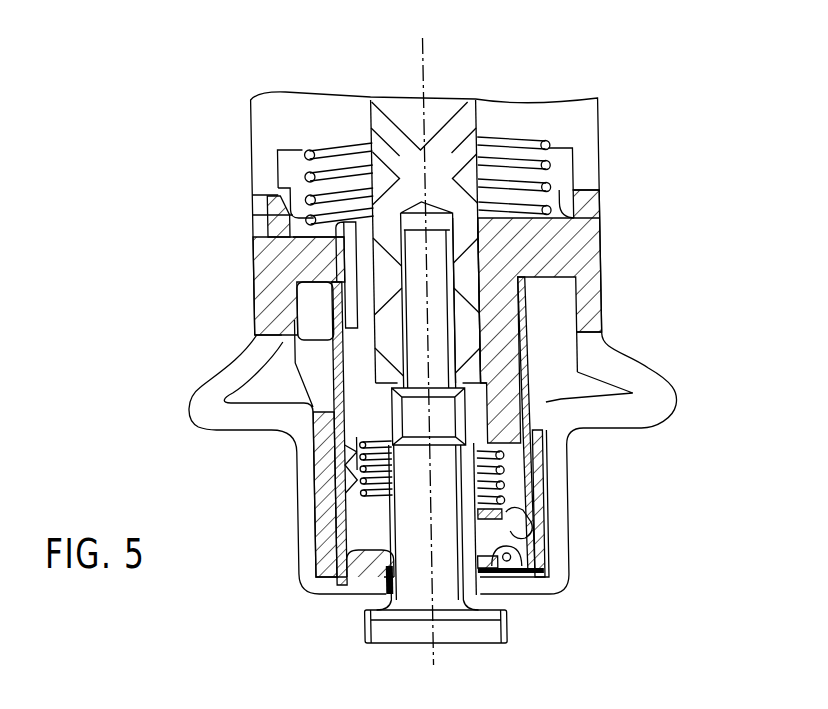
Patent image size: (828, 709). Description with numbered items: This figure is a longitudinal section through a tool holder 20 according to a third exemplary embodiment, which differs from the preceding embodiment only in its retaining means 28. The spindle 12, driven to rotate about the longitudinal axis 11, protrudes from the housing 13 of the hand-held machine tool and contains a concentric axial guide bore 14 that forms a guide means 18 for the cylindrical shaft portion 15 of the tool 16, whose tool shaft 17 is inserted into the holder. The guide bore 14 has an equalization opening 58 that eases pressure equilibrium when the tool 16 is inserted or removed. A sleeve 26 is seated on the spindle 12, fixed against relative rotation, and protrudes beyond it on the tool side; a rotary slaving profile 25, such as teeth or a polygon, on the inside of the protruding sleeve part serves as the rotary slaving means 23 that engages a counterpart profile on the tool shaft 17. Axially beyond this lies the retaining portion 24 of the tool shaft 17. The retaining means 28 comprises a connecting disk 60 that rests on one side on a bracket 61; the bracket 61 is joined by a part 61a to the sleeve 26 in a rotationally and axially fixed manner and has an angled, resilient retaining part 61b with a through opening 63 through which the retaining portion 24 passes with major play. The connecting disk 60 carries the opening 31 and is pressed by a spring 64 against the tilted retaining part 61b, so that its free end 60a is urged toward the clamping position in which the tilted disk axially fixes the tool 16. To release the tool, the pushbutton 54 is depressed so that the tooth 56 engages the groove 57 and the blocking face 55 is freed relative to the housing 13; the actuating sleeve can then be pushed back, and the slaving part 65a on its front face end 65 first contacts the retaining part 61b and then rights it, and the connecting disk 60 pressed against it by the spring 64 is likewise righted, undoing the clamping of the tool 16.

The longitudinal axis 11 is at (424, 58).
The spindle 12 is at (563, 333).
The housing 13 is at (583, 130).
The axial guide bore 14 is at (483, 194).
The cylindrical shaft portion 15 is at (433, 328).
The tool 16 is at (505, 637).
The tool shaft 17 is at (385, 604).
The guide means 18 is at (480, 289).
The tool holder 20 is at (185, 178).
The rotary slaving means 23 is at (500, 414).
The retaining portion 24 is at (407, 472).
The rotary slaving profile 25 is at (440, 420).
The sleeve 26 is at (547, 256).
The retaining means 28 is at (300, 563).
The opening 31 is at (502, 467).
The pushbutton 54 is at (275, 278).
The blocking face 55 is at (277, 193).
The tooth 56 is at (315, 311).
The groove 57 is at (347, 238).
The equalization opening 58 is at (545, 229).
The connecting disk 60 is at (350, 532).
The free end of the connecting disk 60a is at (512, 507).
The bracket 61 is at (347, 488).
The connecting part of the bracket 61a is at (282, 333).
The angled retaining part 61b is at (500, 552).
The through opening 63 is at (498, 575).
The spring 64 is at (565, 452).
The front face end 65 is at (312, 592).
The slaving part 65a is at (475, 577).